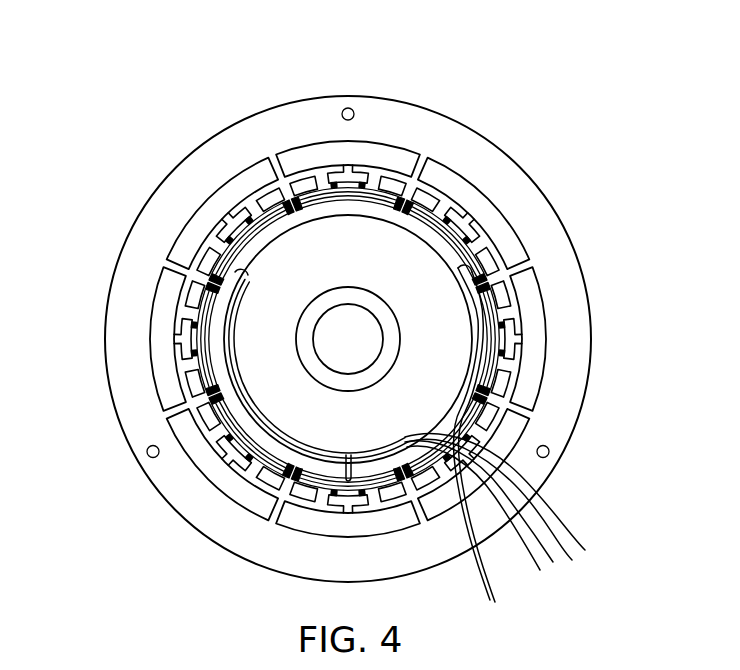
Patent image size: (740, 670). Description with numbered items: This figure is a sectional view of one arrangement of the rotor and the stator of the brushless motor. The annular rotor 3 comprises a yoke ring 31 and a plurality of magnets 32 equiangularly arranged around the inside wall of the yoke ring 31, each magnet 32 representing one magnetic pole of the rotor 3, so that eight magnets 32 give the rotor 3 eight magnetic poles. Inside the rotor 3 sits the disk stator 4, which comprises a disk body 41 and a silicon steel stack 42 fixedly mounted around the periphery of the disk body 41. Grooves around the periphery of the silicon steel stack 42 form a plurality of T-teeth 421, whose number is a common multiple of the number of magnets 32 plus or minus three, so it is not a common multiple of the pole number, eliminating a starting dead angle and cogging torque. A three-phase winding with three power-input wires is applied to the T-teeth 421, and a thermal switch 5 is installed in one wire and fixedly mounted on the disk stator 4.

The annular rotor 3 is at (357, 339).
The yoke ring 31 is at (578, 320).
The magnet 32 is at (530, 297).
The disk stator 4 is at (218, 242).
The disk body 41 is at (313, 232).
The silicon steel stack 42 is at (295, 276).
The T-tooth 421 is at (393, 185).
The thermal switch 5 is at (260, 472).